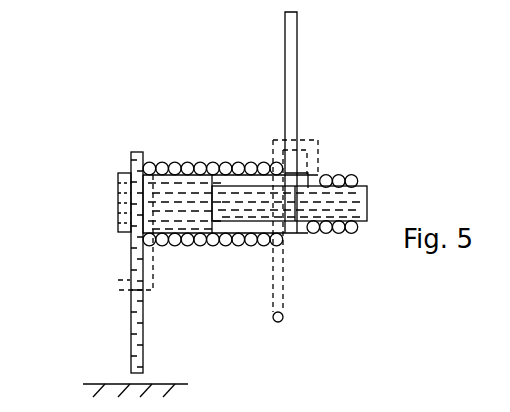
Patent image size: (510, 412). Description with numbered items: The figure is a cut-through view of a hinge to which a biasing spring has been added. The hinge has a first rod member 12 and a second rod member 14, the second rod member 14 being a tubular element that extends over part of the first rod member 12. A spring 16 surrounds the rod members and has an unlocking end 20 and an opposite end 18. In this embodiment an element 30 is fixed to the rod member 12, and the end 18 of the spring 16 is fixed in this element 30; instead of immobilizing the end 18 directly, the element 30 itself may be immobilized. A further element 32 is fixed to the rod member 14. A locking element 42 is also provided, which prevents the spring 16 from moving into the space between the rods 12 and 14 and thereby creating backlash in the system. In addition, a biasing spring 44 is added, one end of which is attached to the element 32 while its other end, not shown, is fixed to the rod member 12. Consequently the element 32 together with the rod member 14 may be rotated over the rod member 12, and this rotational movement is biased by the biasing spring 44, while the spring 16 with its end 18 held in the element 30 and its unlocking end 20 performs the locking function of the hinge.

The first rod member 12 is at (95, 198).
The second rod member 14 is at (303, 256).
The spring 16 is at (202, 137).
The end of the spring 18 is at (174, 293).
The unlocking end 20 is at (307, 336).
The element fixed to the rod member 30 is at (105, 326).
The element fixed to rod member 14 32 is at (323, 35).
The locking element 42 is at (322, 245).
The biasing spring 44 is at (365, 153).